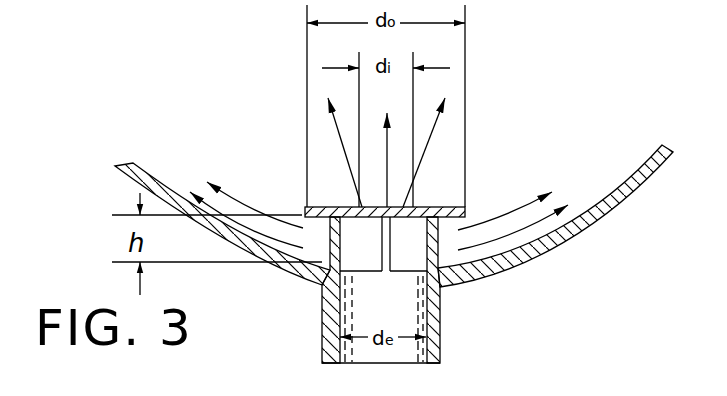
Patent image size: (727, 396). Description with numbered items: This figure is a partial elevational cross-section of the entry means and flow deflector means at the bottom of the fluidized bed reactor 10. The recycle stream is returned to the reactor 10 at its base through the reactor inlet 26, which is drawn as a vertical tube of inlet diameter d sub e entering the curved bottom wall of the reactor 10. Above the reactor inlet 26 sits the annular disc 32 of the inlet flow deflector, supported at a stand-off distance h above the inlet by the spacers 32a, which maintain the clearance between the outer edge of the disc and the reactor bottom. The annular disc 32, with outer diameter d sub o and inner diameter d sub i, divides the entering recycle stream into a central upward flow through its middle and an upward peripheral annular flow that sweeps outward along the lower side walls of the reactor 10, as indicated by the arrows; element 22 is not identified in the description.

The reactor 10 is at (568, 246).
The nozzle tube 22 is at (322, 340).
The reactor inlet 26 is at (441, 290).
The annular disc 32 is at (462, 213).
The spacers 32a is at (427, 250).